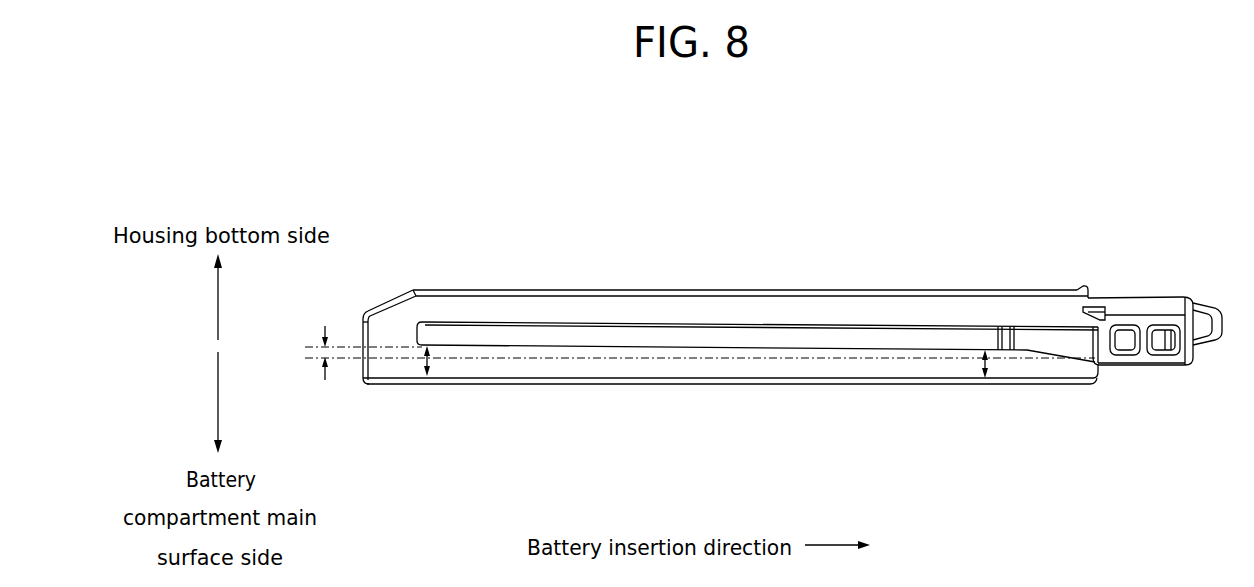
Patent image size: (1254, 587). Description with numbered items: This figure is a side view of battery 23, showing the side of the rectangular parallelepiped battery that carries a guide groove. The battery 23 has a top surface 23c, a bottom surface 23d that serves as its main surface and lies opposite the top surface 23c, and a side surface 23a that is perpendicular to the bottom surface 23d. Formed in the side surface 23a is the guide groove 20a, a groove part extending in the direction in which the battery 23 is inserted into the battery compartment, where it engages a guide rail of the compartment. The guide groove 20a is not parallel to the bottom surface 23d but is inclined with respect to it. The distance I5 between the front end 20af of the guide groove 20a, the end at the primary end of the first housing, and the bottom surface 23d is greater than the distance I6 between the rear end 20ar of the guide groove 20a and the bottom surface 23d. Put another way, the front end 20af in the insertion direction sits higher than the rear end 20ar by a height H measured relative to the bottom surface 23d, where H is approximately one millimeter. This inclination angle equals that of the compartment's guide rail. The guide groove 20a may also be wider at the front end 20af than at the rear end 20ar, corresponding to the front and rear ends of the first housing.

The guide groove 20a is at (512, 337).
The front end of guide groove 20af is at (413, 292).
The rear end of guide groove 20ar is at (985, 333).
The battery 23 is at (792, 326).
The side surface 23a is at (678, 305).
The top surface 23c is at (795, 288).
The bottom surface 23d is at (775, 384).
The distance I5 is at (427, 362).
The distance I6 is at (985, 378).
The height difference H is at (325, 352).